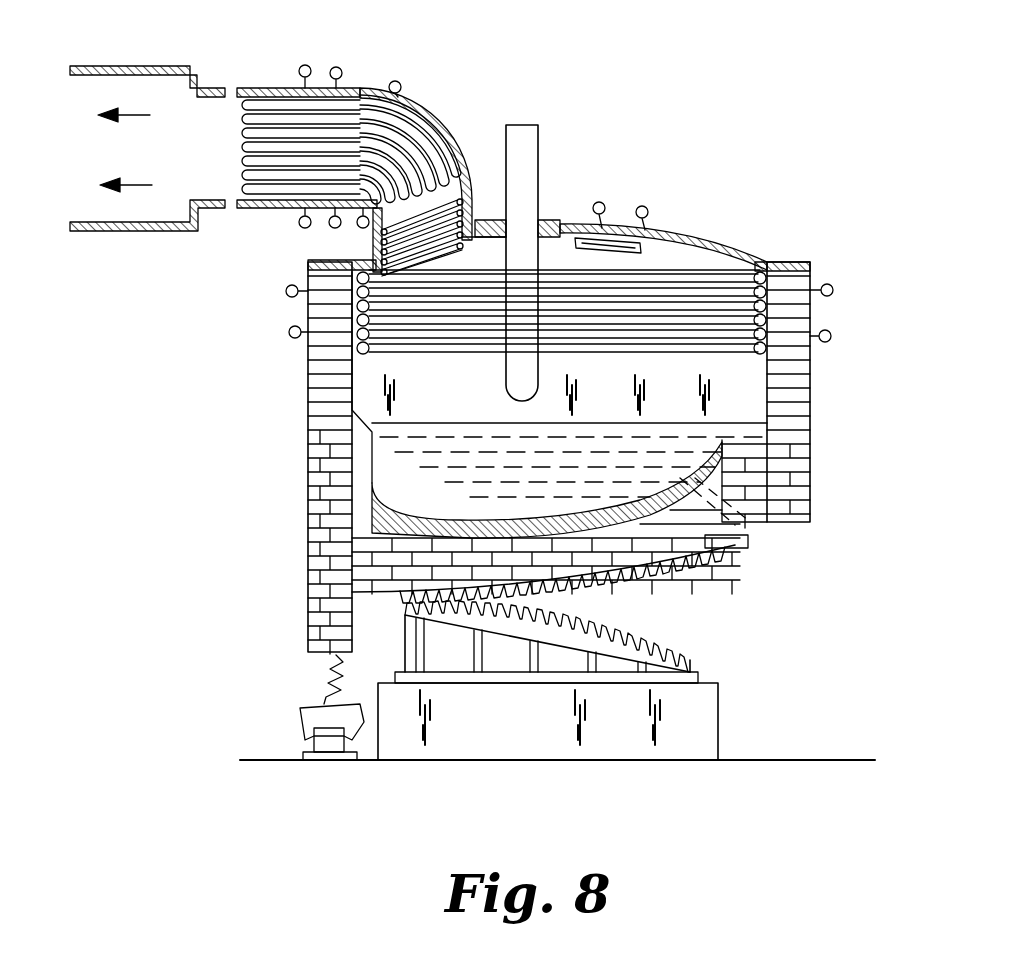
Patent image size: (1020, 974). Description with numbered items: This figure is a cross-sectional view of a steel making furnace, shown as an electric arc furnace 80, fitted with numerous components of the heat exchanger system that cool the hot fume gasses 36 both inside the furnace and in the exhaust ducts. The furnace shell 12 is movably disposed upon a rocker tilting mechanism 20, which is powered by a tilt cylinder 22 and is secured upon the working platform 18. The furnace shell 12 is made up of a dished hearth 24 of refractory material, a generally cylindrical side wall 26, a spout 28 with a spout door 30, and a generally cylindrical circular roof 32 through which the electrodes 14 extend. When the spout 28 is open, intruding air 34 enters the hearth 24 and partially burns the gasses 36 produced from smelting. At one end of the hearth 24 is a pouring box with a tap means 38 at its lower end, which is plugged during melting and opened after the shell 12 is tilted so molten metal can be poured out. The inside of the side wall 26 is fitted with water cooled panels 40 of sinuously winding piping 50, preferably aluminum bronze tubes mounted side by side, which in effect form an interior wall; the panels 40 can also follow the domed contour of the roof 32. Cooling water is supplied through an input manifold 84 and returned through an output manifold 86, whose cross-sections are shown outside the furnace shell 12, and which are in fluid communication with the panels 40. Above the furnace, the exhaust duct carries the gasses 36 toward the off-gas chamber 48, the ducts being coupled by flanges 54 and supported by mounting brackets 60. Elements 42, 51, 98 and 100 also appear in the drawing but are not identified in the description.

The electric arc furnace 80 is at (690, 77).
The hot fume gasses 36 is at (137, 103).
The off-gas chamber 48 is at (100, 233).
The flange 54 is at (366, 90).
The mounting bracket 60 is at (466, 182).
The electrode 14 is at (527, 125).
The roof plate 42 is at (540, 222).
The roof 32 is at (660, 232).
The roof port 51 is at (606, 238).
The spout door 30 is at (318, 368).
The spout 28 is at (312, 390).
The intruding air 34 is at (321, 388).
The furnace shell 12 is at (812, 307).
The cylindrical side wall 26 is at (790, 322).
The sinuously winding piping 50 is at (765, 268).
The water cooled panel 40 is at (710, 320).
The molten bath 98 is at (390, 470).
The hearth lining 100 is at (387, 515).
The dished hearth 24 is at (352, 565).
The tap means 38 is at (735, 555).
The rocker tilting mechanism 20 is at (667, 645).
The working platform 18 is at (720, 718).
The tilt cylinder 22 is at (318, 682).
The output manifold 86 is at (303, 64).
The input manifold 84 is at (338, 66).